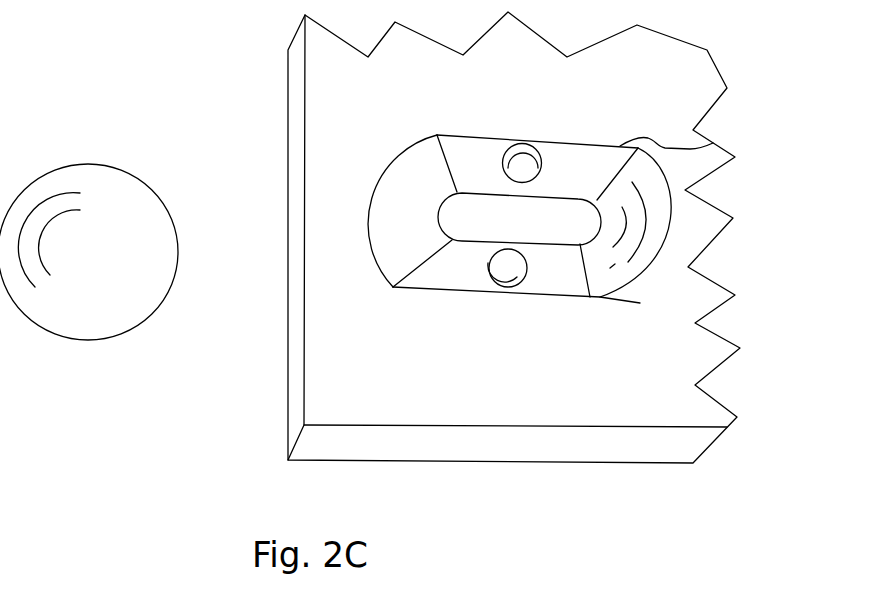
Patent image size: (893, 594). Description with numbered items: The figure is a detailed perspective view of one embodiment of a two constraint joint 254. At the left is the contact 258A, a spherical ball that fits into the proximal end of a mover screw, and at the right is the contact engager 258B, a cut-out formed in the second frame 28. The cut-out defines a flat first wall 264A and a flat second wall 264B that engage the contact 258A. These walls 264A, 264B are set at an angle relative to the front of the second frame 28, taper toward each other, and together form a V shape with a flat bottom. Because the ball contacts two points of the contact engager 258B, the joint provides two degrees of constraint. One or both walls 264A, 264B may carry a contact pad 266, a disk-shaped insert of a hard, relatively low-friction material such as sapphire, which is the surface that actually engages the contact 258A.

The second frame 28 is at (540, 237).
The two constraint joint 254 is at (223, 75).
The contact 258A is at (94, 172).
The contact engager 258B is at (507, 204).
The first wall 264A is at (513, 177).
The second wall 264B is at (620, 284).
The contact pad 266 is at (515, 172).